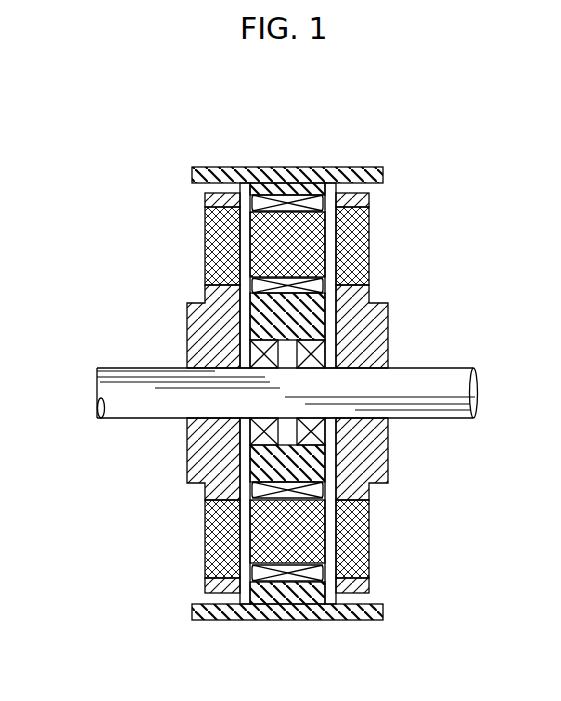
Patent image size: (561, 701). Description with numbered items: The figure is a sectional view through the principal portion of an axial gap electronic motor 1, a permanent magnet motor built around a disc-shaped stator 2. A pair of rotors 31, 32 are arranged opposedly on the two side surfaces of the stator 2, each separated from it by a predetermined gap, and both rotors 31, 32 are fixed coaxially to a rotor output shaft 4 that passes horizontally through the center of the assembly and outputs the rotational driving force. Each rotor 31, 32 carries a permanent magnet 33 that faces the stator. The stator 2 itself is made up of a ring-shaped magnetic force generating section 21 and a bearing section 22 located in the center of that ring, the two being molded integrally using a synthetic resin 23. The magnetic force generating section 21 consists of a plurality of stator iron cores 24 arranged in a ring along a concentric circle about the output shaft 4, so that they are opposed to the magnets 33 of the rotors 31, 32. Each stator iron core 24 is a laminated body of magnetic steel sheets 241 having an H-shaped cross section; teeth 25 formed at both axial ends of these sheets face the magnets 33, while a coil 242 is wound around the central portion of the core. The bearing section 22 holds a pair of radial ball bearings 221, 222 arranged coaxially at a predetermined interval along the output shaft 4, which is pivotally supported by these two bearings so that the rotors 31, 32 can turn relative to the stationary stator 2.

The axial gap electronic motor 1 is at (458, 192).
The stator 2 is at (358, 160).
The rotor output shaft 4 is at (478, 404).
The magnetic force generating section 21 is at (330, 521).
The bearing section 22 is at (335, 432).
The synthetic resin 23 is at (313, 605).
The stator iron core 24 is at (302, 188).
The teeth 25 is at (246, 218).
The rotor 31 is at (182, 309).
The rotor 32 is at (401, 477).
The permanent magnet 33 is at (206, 253).
The radial ball bearing 221 is at (325, 350).
The radial ball bearing 222 is at (250, 351).
The magnetic steel sheet 241 is at (315, 240).
The coil 242 is at (277, 190).